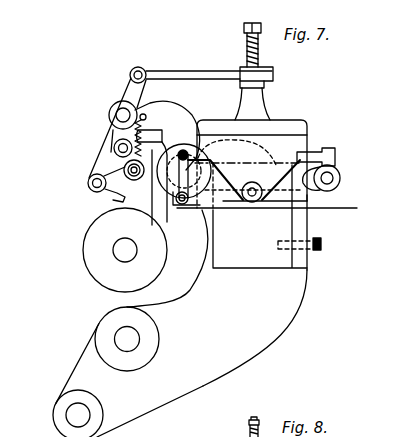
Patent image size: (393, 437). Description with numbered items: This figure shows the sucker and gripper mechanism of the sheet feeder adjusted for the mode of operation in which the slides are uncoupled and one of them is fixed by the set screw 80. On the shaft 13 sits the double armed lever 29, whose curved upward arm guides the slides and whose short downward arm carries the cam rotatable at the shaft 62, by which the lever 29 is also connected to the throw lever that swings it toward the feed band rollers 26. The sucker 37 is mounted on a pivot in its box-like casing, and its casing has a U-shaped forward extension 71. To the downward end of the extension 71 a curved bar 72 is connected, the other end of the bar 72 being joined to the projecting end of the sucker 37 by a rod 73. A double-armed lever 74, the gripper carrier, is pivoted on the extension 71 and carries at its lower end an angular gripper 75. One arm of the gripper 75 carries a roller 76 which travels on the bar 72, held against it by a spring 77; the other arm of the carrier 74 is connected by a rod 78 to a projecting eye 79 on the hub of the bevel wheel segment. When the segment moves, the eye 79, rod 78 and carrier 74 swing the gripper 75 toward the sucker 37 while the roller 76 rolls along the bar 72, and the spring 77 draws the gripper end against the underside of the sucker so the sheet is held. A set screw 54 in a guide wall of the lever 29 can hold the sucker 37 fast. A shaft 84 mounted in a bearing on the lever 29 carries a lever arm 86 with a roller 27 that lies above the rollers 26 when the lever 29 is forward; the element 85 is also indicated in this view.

The shaft 13 is at (115, 335).
The feed band rollers 26 is at (95, 257).
The roller 27 is at (201, 215).
The double armed lever 29 is at (278, 317).
The sucker 37 is at (220, 197).
The set screw 54 is at (318, 150).
The shaft 62 is at (79, 413).
The U-shaped forward extension 71 is at (178, 120).
The curved bar 72 is at (152, 200).
The rod 73 is at (176, 193).
The double-armed lever 74 is at (130, 90).
The angular gripper 75 is at (107, 197).
The roller 76 is at (136, 182).
The spring 77 is at (144, 124).
The rod 78 is at (193, 70).
The projecting eye 79 is at (273, 72).
The set screw 80 is at (321, 250).
The shaft 84 is at (333, 172).
The roller pin 85 is at (341, 181).
The lever arm 86 is at (303, 195).